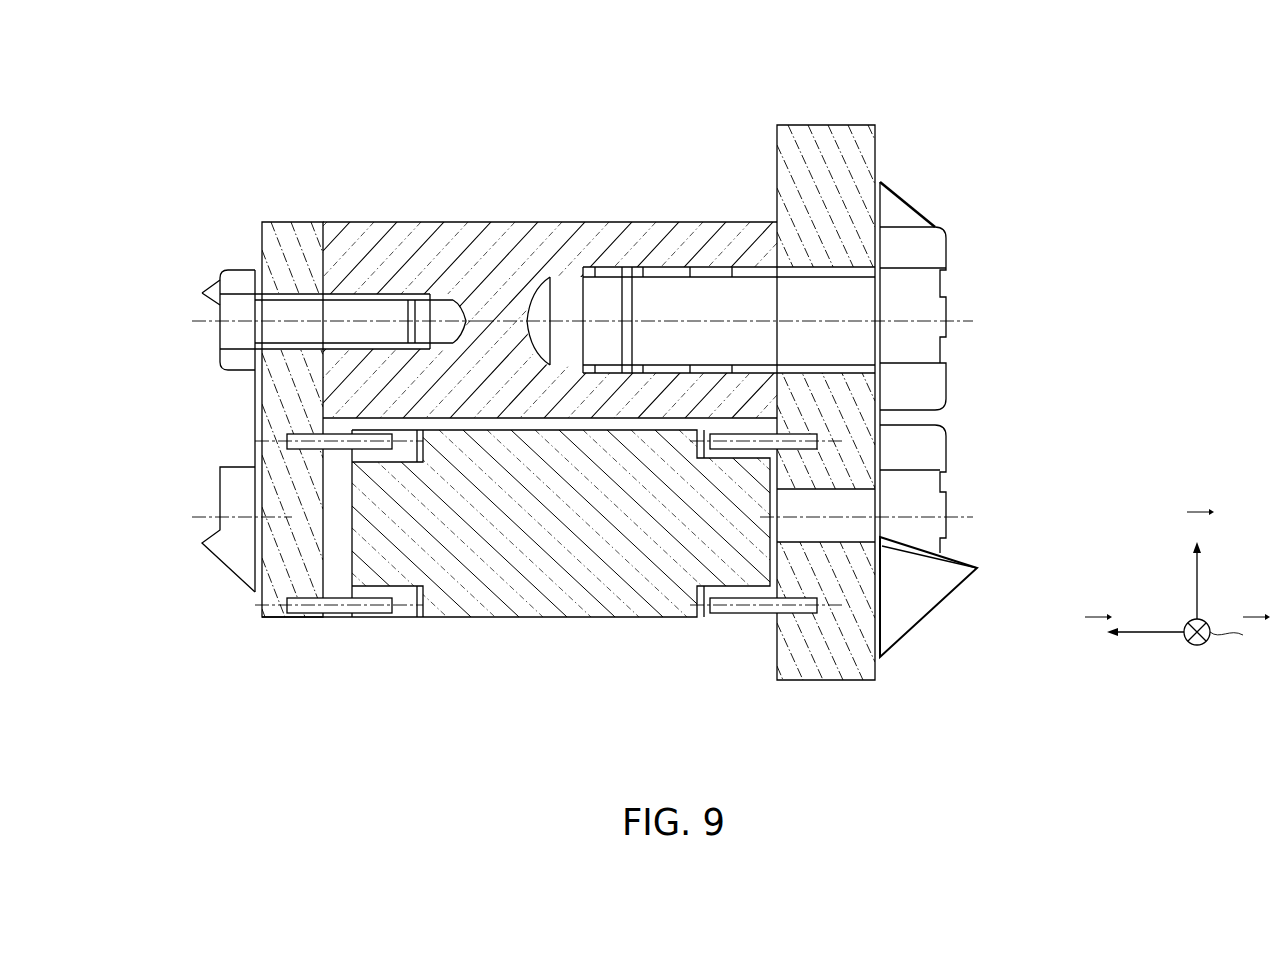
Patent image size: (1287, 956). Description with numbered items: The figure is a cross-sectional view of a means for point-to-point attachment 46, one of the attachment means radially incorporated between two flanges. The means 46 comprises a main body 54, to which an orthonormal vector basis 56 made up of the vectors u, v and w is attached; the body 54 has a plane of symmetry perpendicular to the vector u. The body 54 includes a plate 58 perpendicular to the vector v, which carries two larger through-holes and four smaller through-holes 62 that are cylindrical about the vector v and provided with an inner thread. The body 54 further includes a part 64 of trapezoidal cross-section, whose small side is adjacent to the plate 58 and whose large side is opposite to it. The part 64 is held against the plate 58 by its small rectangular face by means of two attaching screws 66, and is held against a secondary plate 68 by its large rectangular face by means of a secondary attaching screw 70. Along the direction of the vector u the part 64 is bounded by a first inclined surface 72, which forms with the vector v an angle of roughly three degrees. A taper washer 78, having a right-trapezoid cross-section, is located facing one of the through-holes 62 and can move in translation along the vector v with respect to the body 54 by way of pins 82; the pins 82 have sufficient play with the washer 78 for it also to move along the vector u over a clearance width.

The means for point-to-point attachment 46 is at (1066, 88).
The main body 54 is at (796, 98).
The orthonormal vector basis 56 is at (1218, 670).
The plate 58 is at (838, 125).
The through-holes 62 is at (760, 514).
The part having a trapezoidal cross-section 64 is at (510, 200).
The attaching screws 66 is at (948, 445).
The secondary plate 68 is at (310, 222).
The secondary attaching screw 70 is at (218, 312).
The first inclined surface 72 is at (356, 618).
The taper washer 78 is at (520, 562).
The pins 82 is at (343, 614).